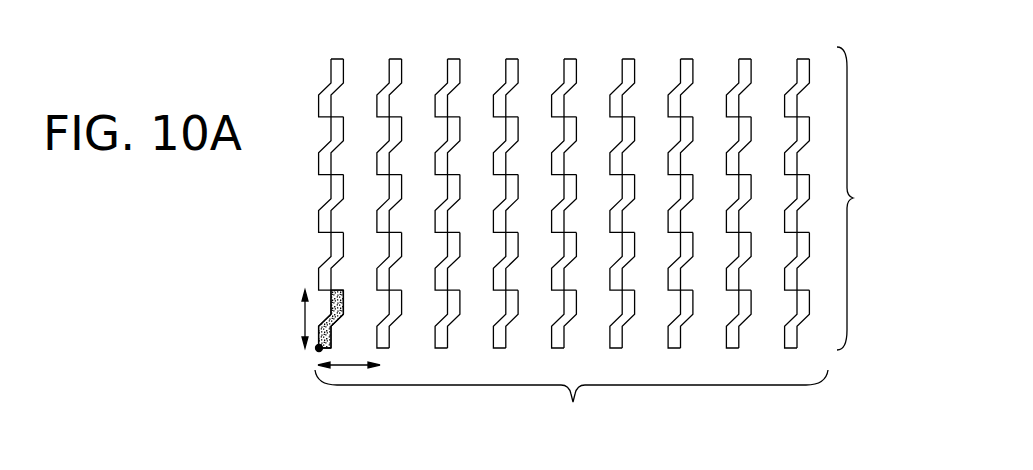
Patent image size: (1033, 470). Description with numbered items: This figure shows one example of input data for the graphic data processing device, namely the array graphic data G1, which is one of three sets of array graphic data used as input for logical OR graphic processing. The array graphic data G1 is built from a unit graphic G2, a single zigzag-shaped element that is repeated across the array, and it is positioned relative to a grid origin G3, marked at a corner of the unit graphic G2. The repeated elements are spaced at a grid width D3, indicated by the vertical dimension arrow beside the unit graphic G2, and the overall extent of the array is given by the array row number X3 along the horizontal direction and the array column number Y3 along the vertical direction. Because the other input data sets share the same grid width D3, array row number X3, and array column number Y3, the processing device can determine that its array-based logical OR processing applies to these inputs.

The array graphic data G1 is at (772, 55).
The unit graphic G2 is at (318, 312).
The grid origin G3 is at (319, 349).
The grid width D3 is at (303, 297).
The array row number X3 is at (571, 397).
The array column number Y3 is at (859, 198).